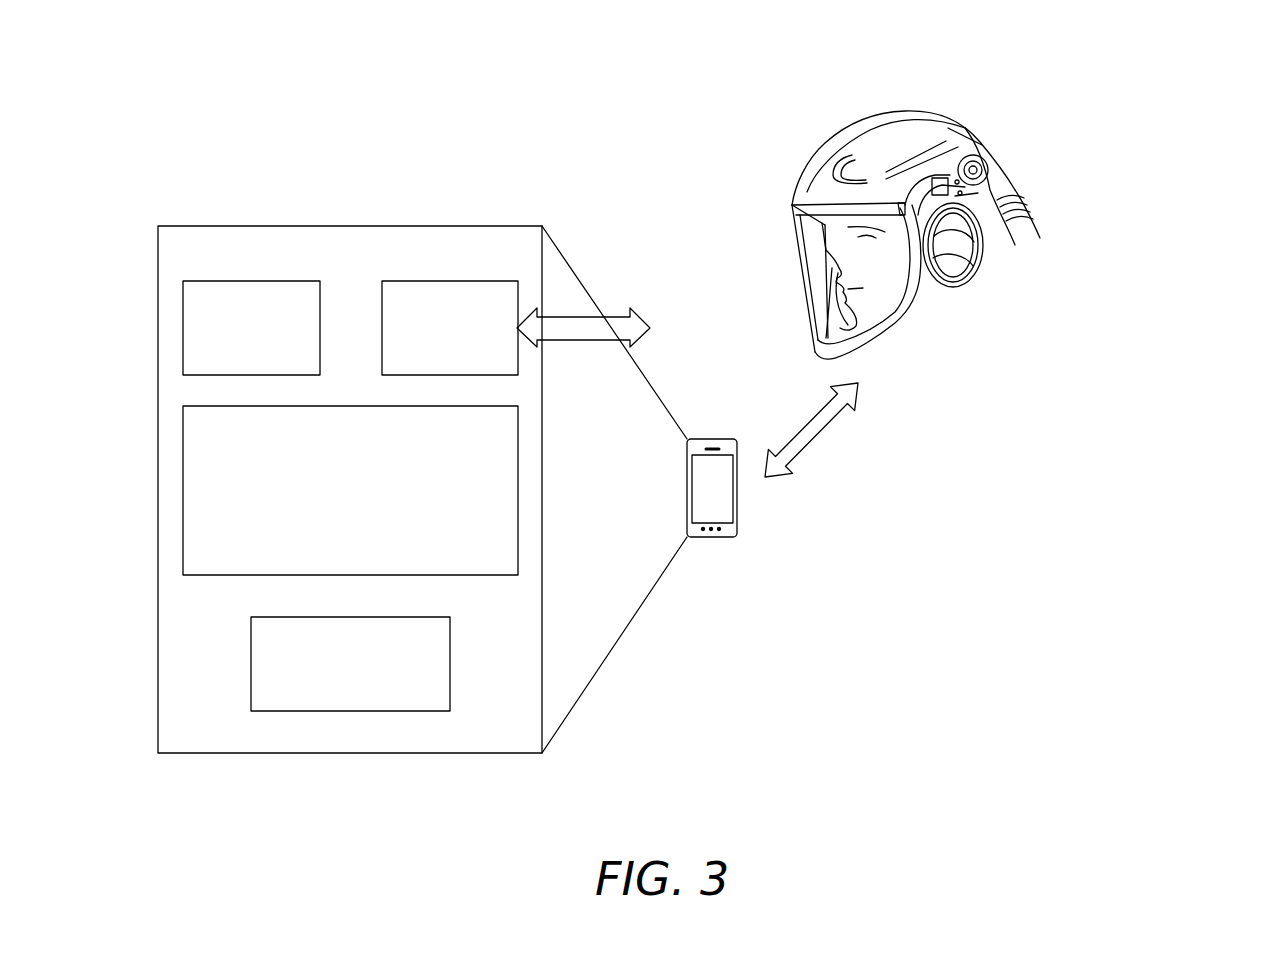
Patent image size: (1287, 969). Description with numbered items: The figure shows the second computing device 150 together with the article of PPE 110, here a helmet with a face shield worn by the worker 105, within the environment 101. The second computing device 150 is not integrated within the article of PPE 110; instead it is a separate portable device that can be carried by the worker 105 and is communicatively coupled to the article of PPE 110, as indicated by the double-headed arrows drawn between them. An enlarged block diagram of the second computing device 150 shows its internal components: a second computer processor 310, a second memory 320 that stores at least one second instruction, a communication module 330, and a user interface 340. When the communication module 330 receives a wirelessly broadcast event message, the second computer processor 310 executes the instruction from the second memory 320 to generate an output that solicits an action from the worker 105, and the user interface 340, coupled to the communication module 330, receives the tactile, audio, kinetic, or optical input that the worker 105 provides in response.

The environment 101 is at (1112, 83).
The worker 105 is at (897, 352).
The article of PPE 110 is at (823, 170).
The second computing device 150 is at (365, 265).
The second computer processor 310 is at (265, 344).
The second memory 320 is at (365, 505).
The communication module 330 is at (462, 344).
The user interface 340 is at (365, 677).